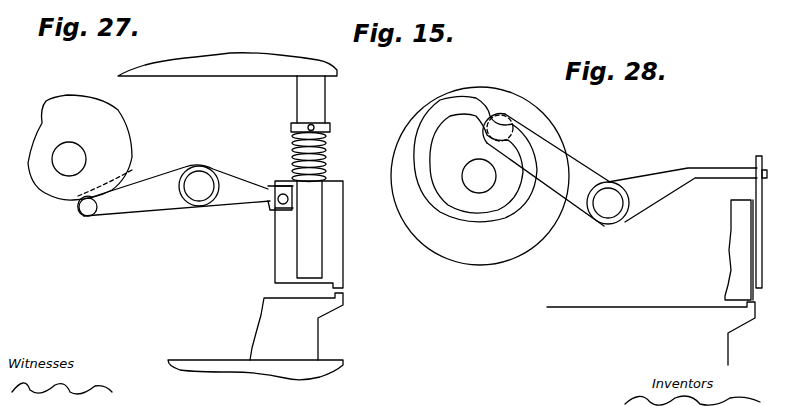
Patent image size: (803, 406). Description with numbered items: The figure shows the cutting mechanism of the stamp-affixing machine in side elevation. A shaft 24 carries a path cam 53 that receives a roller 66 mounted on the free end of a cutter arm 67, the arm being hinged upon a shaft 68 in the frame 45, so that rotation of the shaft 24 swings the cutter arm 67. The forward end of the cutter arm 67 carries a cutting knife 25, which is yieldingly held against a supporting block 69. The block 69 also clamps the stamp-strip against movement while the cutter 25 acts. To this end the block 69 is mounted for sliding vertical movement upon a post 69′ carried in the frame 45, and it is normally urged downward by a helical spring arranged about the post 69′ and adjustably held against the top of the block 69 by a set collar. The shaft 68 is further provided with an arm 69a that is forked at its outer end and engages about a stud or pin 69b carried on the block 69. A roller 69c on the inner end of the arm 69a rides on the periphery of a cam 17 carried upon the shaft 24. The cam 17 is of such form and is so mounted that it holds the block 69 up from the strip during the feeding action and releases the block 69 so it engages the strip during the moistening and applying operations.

In FIG. 27, the cam 17 is at (80, 147).
In FIG. 27, the shaft 24 is at (69, 159).
In FIG. 15, the shaft 24 is at (479, 176).
In FIG. 28, the cutting knife 25 is at (750, 191).
In FIG. 27, the frame 45 is at (328, 361).
In FIG. 15, the path cam 53 is at (480, 176).
In FIG. 15, the roller 66 is at (528, 126).
In FIG. 15, the cutter arm 67 is at (546, 170).
In FIG. 27, the shaft 68 is at (199, 186).
In FIG. 15, the shaft 68 is at (608, 203).
In FIG. 27, the supporting block 69 is at (340, 232).
In FIG. 28, the supporting block 69 is at (731, 236).
In FIG. 27, the arm 69a is at (230, 200).
In FIG. 27, the stud or pin 69b is at (280, 207).
In FIG. 27, the roller 69c is at (99, 215).
In FIG. 27, the post 69′ is at (318, 100).